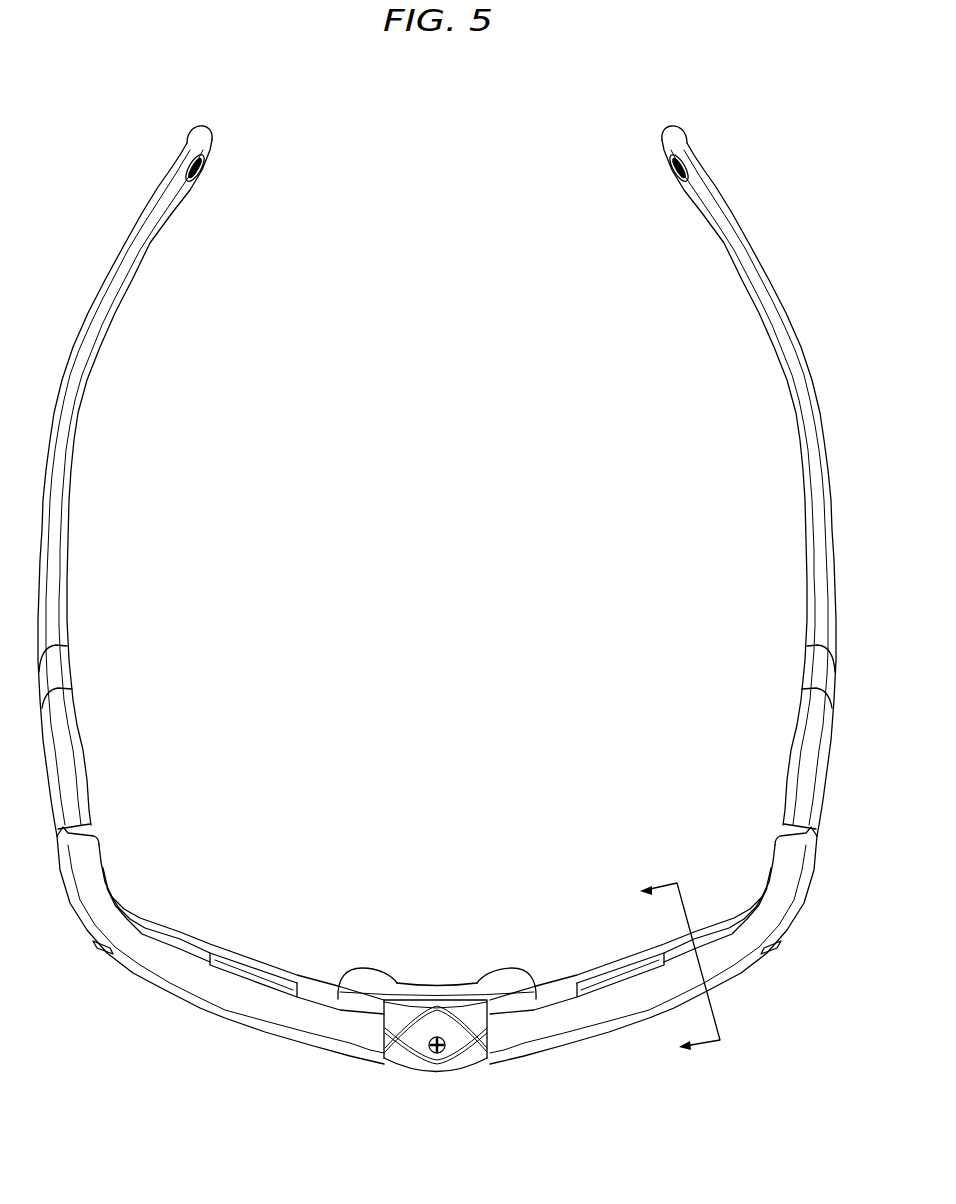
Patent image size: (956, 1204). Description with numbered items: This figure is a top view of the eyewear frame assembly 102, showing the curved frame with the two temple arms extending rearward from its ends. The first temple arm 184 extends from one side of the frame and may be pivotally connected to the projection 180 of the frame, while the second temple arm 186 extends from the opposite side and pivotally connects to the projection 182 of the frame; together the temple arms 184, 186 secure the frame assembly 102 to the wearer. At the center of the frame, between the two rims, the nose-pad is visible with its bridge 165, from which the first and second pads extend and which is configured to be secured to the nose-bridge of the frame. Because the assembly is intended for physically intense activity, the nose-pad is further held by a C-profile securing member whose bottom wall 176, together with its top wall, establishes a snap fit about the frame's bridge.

The eyewear frame assembly 102 is at (126, 59).
The second temple arm 186 is at (97, 327).
The first temple arm 184 is at (788, 352).
The projection 182 is at (87, 863).
The projection 180 is at (783, 866).
The bridge 165 is at (412, 991).
The bottom wall 176 is at (463, 1020).